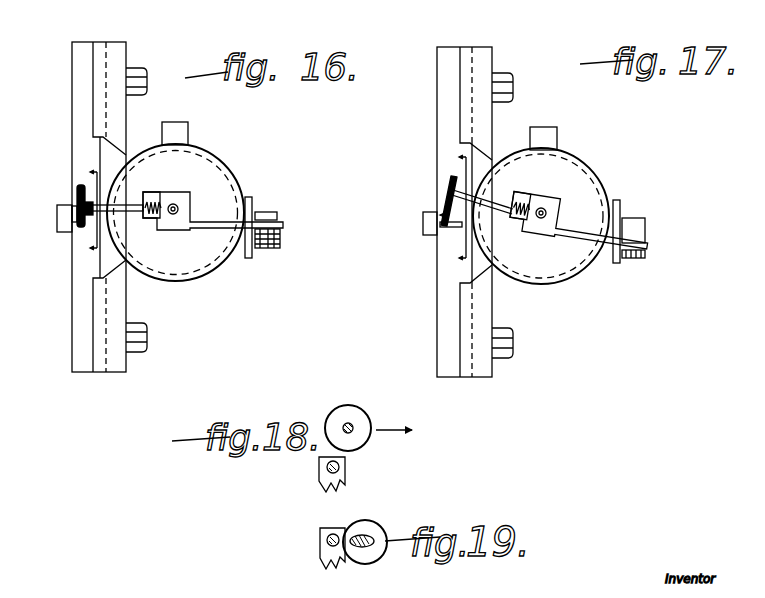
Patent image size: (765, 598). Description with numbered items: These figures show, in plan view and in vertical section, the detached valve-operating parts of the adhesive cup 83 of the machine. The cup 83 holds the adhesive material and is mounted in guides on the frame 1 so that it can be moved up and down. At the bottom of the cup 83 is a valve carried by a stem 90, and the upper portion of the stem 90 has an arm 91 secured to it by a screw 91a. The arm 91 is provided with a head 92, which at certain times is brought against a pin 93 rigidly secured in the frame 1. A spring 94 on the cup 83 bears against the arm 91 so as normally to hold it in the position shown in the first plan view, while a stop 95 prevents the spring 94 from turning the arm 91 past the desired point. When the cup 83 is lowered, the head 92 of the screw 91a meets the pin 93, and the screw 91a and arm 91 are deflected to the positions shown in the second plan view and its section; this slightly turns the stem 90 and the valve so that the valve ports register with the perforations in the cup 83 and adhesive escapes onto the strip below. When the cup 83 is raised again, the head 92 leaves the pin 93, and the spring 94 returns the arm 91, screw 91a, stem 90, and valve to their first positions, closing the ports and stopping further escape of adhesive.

In FIG. 16, the frame 1 is at (74, 42).
In FIG. 17, the frame 1 is at (452, 378).
In FIG. 18, the frame 1 is at (319, 472).
In FIG. 19, the frame 1 is at (321, 562).
In FIG. 16, the cup 83 is at (181, 280).
In FIG. 17, the cup 83 is at (543, 283).
In FIG. 16, the stem 90 is at (173, 204).
In FIG. 17, the stem 90 is at (542, 208).
In FIG. 16, the arm 91 is at (198, 222).
In FIG. 17, the arm 91 is at (568, 231).
In FIG. 16, the screw 91a is at (155, 199).
In FIG. 17, the screw 91a is at (522, 199).
In FIG. 18, the screw 91a is at (353, 424).
In FIG. 19, the screw 91a is at (366, 539).
In FIG. 16, the head 92 is at (78, 193).
In FIG. 17, the head 92 is at (450, 182).
In FIG. 18, the head 92 is at (344, 421).
In FIG. 19, the head 92 is at (378, 533).
In FIG. 16, the pin 93 is at (90, 218).
In FIG. 17, the pin 93 is at (458, 226).
In FIG. 18, the pin 93 is at (340, 469).
In FIG. 19, the pin 93 is at (330, 534).
In FIG. 16, the spring 94 is at (268, 250).
In FIG. 17, the spring 94 is at (638, 259).
In FIG. 16, the stop 95 is at (250, 208).
In FIG. 17, the stop 95 is at (618, 222).